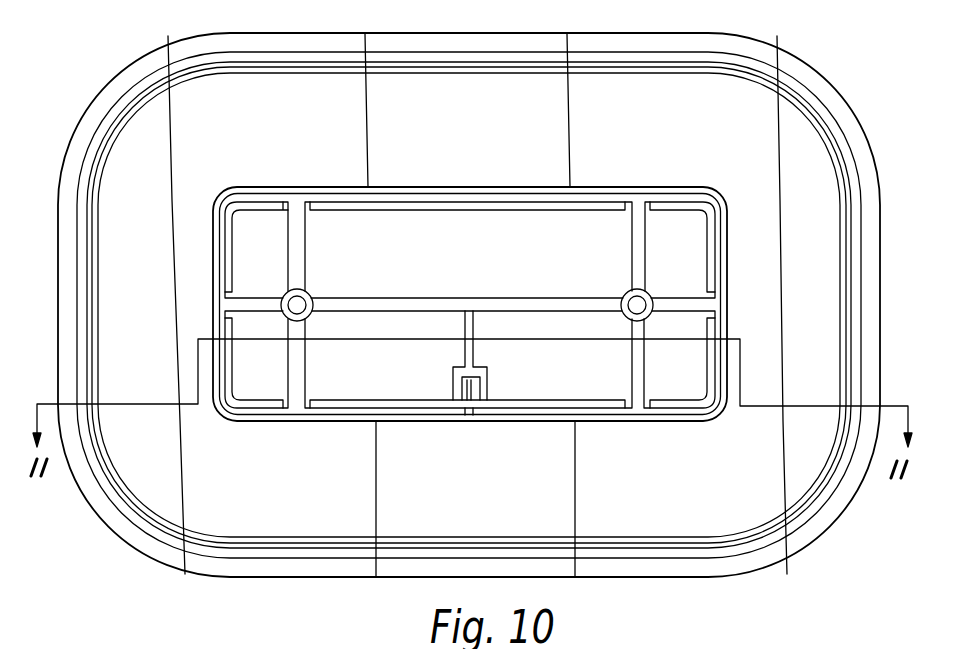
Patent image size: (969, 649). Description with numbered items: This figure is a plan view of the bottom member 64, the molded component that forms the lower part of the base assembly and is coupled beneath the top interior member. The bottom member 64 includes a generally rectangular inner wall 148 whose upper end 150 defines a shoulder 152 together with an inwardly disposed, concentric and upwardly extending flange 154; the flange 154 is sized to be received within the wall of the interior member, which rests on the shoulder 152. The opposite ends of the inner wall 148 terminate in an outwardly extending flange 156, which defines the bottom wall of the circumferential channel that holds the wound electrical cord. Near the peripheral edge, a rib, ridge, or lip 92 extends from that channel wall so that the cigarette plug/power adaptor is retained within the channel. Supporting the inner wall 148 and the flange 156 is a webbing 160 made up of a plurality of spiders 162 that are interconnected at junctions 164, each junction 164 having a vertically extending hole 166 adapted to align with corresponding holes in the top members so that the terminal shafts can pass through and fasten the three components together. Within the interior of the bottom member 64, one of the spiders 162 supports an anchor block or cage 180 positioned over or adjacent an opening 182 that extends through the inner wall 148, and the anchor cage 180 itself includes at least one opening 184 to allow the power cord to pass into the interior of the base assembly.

The bottom member 64 is at (90, 92).
The rib, ridge, or lip 92 is at (377, 65).
The inner wall 148 is at (452, 190).
The upper end 150 is at (568, 192).
The shoulder 152 is at (580, 176).
The flange 154 is at (687, 203).
The outwardly extending flange 156 is at (162, 240).
The webbing 160 is at (552, 289).
The spiders 162 is at (300, 247).
The junctions 164 is at (313, 292).
The holes 166 is at (630, 307).
The anchor block or cage 180 is at (487, 370).
The opening 182 is at (470, 410).
The opening 184 is at (477, 391).